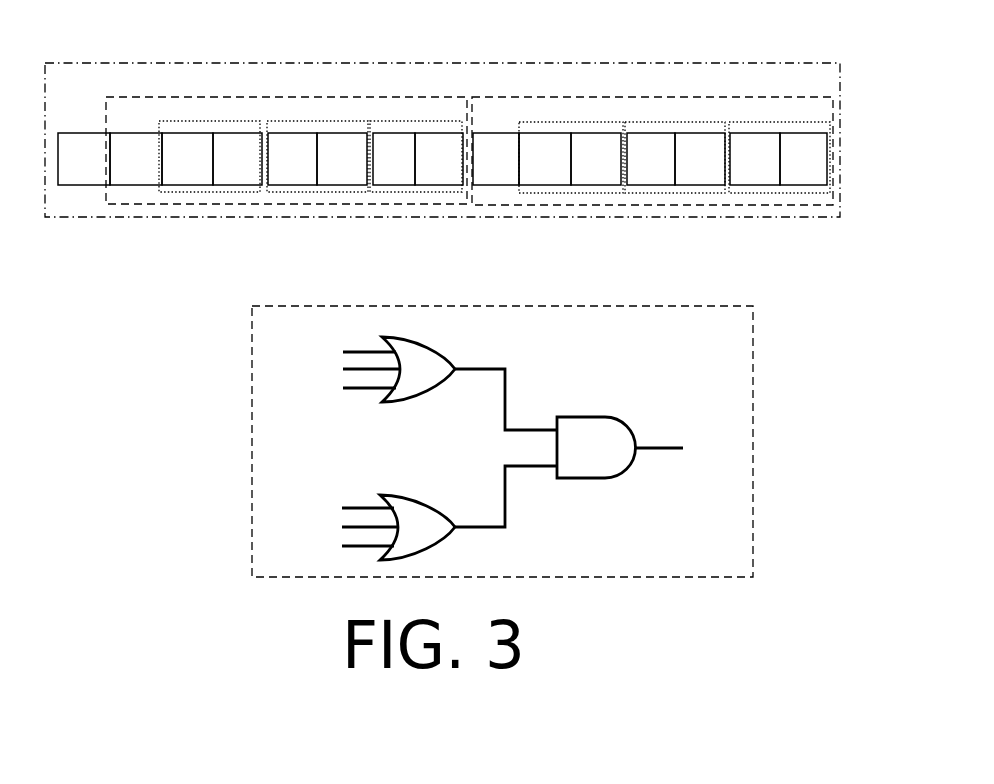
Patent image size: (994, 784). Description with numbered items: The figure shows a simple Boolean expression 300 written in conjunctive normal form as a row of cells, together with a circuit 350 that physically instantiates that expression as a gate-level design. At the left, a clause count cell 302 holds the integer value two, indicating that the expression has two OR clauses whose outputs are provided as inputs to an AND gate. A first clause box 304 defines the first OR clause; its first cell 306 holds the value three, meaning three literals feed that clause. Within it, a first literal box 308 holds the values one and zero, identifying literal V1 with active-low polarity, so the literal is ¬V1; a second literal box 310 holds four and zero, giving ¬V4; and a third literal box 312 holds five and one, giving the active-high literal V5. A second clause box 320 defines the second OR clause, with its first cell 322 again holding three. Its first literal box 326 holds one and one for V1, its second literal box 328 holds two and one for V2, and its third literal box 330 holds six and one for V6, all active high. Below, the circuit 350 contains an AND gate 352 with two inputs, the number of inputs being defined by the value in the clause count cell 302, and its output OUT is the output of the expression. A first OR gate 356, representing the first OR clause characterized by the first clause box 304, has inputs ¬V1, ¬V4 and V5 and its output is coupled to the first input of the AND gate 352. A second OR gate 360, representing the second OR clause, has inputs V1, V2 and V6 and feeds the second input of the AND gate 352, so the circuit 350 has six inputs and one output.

The Boolean expression 300 is at (206, 63).
The clause count cell 302 is at (62, 133).
The first clause box 304 is at (127, 97).
The first cell 306 is at (117, 133).
The first literal box 308 is at (174, 121).
The second literal box 310 is at (278, 121).
The third literal box 312 is at (376, 121).
The second clause box 320 is at (477, 97).
The first cell 322 is at (475, 133).
The first literal box 326 is at (530, 122).
The second literal box 328 is at (635, 122).
The third literal box 330 is at (737, 122).
The circuit 350 is at (276, 306).
The AND gate 352 is at (591, 416).
The first OR gate 356 is at (412, 340).
The second OR gate 360 is at (433, 508).